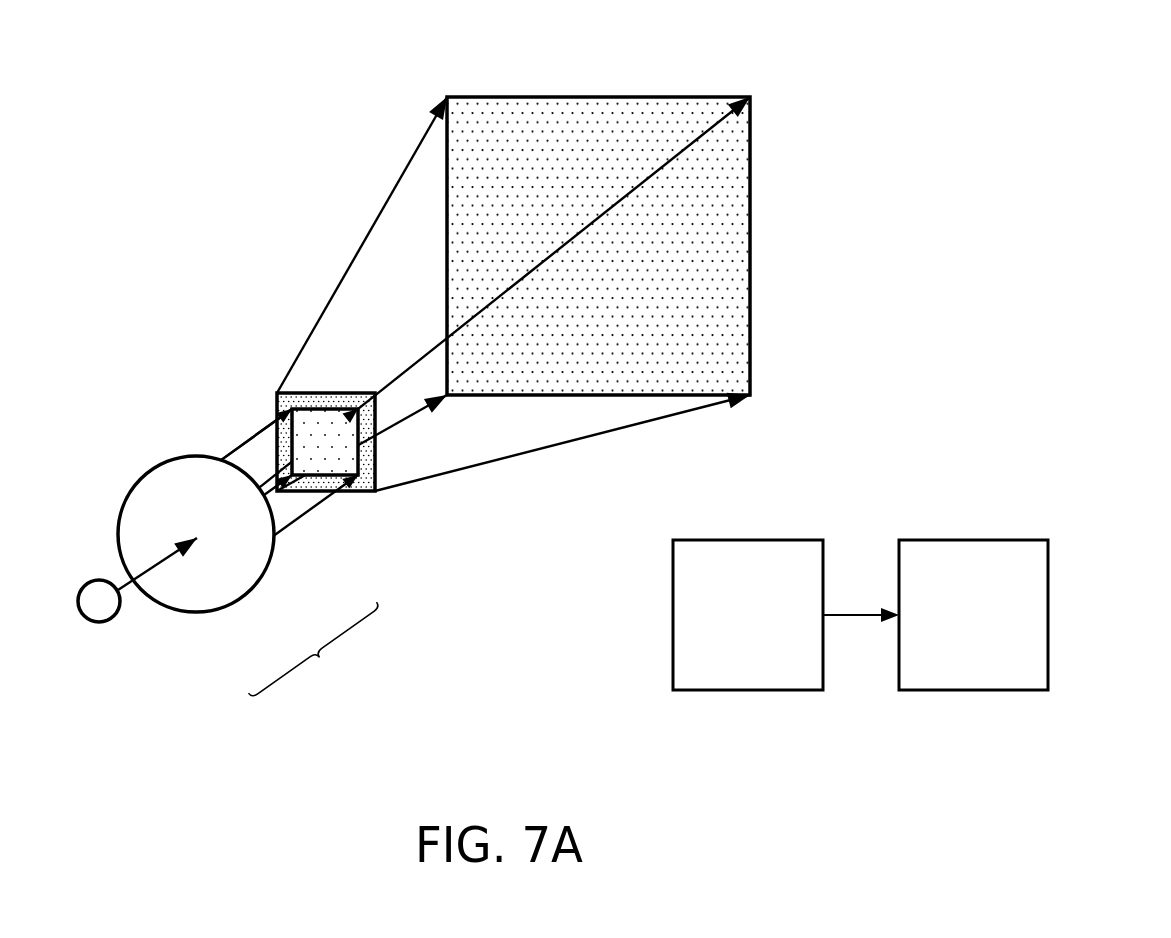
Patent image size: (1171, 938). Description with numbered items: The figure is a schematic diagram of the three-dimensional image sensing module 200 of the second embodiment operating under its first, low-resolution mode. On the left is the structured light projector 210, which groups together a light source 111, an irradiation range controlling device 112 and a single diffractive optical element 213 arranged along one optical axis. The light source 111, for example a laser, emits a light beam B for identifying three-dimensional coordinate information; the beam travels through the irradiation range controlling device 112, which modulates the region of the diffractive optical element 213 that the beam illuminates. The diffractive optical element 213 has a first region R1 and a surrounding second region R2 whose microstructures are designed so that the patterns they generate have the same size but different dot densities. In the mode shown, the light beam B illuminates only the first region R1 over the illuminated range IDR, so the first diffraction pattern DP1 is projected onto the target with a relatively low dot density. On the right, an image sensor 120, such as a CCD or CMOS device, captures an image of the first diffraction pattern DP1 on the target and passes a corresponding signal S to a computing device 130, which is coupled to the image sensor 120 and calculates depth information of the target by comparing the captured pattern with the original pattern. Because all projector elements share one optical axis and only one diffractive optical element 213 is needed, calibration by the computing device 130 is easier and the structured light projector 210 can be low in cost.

The first diffraction pattern DP1 is at (595, 96).
The image display region IDR is at (258, 458).
The first region R1 is at (337, 453).
The second region R2 is at (370, 445).
The light beam B is at (125, 584).
The light source 111 is at (125, 622).
The irradiation range controlling device 112 is at (240, 608).
The diffractive optical element 213 is at (409, 509).
The structured light projector 210 is at (313, 649).
The image sensor 120 is at (750, 673).
The computing device 130 is at (973, 673).
The signal S is at (857, 617).
The three-dimensional image sensing module 200 is at (1143, 757).